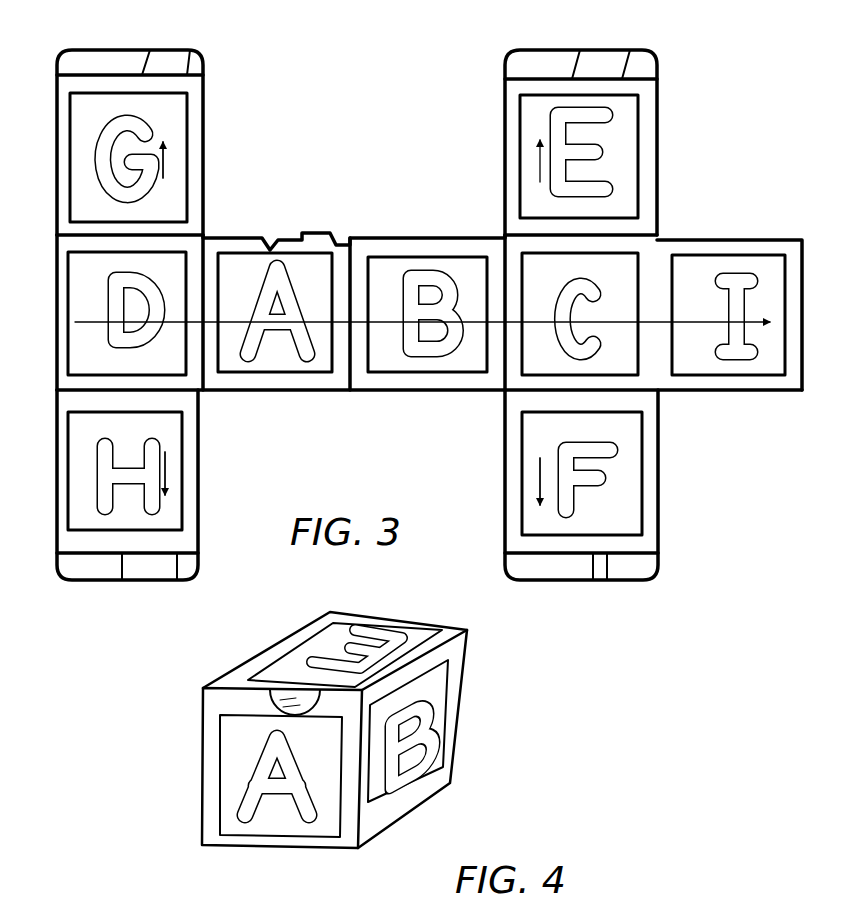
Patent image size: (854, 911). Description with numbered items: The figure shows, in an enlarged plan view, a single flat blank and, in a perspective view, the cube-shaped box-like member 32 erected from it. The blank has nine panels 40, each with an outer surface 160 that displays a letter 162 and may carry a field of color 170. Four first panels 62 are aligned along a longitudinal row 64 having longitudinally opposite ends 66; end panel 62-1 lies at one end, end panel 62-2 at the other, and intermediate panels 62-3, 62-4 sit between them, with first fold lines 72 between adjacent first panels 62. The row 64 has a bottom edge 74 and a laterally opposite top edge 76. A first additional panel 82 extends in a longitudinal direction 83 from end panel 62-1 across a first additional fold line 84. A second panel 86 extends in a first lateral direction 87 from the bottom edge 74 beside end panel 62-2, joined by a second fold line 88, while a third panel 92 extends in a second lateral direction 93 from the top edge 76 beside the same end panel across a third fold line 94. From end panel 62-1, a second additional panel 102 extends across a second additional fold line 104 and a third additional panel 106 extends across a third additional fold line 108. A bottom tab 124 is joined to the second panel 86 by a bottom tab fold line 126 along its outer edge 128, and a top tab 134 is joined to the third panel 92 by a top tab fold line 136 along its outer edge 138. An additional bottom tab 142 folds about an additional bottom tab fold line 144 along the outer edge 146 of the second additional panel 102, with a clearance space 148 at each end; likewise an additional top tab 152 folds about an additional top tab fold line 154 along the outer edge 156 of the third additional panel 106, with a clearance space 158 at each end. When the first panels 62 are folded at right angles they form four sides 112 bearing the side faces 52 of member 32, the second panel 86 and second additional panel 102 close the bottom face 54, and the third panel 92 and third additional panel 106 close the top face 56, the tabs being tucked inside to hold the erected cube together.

In FIG. 4, the box-like member 32 is at (460, 722).
In FIG. 3, the panels 40 is at (205, 112).
In FIG. 4, the side faces 52 is at (203, 780).
In FIG. 4, the bottom face 54 is at (335, 853).
In FIG. 4, the top face 56 is at (253, 665).
In FIG. 3, the first panels 62 is at (215, 238).
In FIG. 3, the end panel 62-1 is at (665, 240).
In FIG. 3, the end panel 62-2 is at (206, 391).
In FIG. 3, the intermediate panel 62-3 is at (300, 391).
In FIG. 3, the intermediate panel 62-4 is at (465, 391).
In FIG. 3, the longitudinal row 64 is at (375, 308).
In FIG. 3, the longitudinally opposite ends 66 is at (62, 312).
In FIG. 3, the first fold lines 72 is at (215, 300).
In FIG. 3, the bottom edge 74 is at (378, 395).
In FIG. 3, the top edge 76 is at (418, 238).
In FIG. 3, the first additional panel 82 is at (772, 240).
In FIG. 3, the longitudinal direction 83 is at (708, 320).
In FIG. 3, the first additional fold line 84 is at (660, 372).
In FIG. 3, the second panel 86 is at (190, 537).
In FIG. 3, the first lateral direction 87 is at (165, 470).
In FIG. 3, the second fold line 88 is at (125, 393).
In FIG. 3, the third panel 92 is at (208, 133).
In FIG. 3, the second lateral direction 93 is at (165, 158).
In FIG. 3, the third fold line 94 is at (152, 233).
In FIG. 3, the second additional panel 102 is at (660, 472).
In FIG. 3, the second additional fold line 104 is at (505, 392).
In FIG. 3, the third additional panel 106 is at (658, 112).
In FIG. 3, the third additional fold line 108 is at (620, 240).
In FIG. 4, the sides 112 is at (203, 732).
In FIG. 3, the bottom tab 124 is at (85, 581).
In FIG. 3, the bottom tab fold line 126 is at (122, 581).
In FIG. 3, the outer edge 128 is at (176, 581).
In FIG. 3, the top tab 134 is at (112, 62).
In FIG. 3, the top tab fold line 136 is at (148, 62).
In FIG. 3, the outer edge 138 is at (197, 58).
In FIG. 3, the additional bottom tab 142 is at (592, 576).
In FIG. 3, the additional bottom tab fold line 144 is at (598, 581).
In FIG. 3, the outer edge 146 is at (607, 580).
In FIG. 3, the clearance space 148 is at (508, 566).
In FIG. 3, the additional top tab 152 is at (552, 58).
In FIG. 3, the additional top tab fold line 154 is at (580, 68).
In FIG. 3, the outer edge 156 is at (629, 60).
In FIG. 3, the clearance space 158 is at (504, 75).
In FIG. 3, the outer surface 160 is at (313, 238).
In FIG. 3, the letter 162 is at (268, 240).
In FIG. 3, the field of color 170 is at (340, 233).